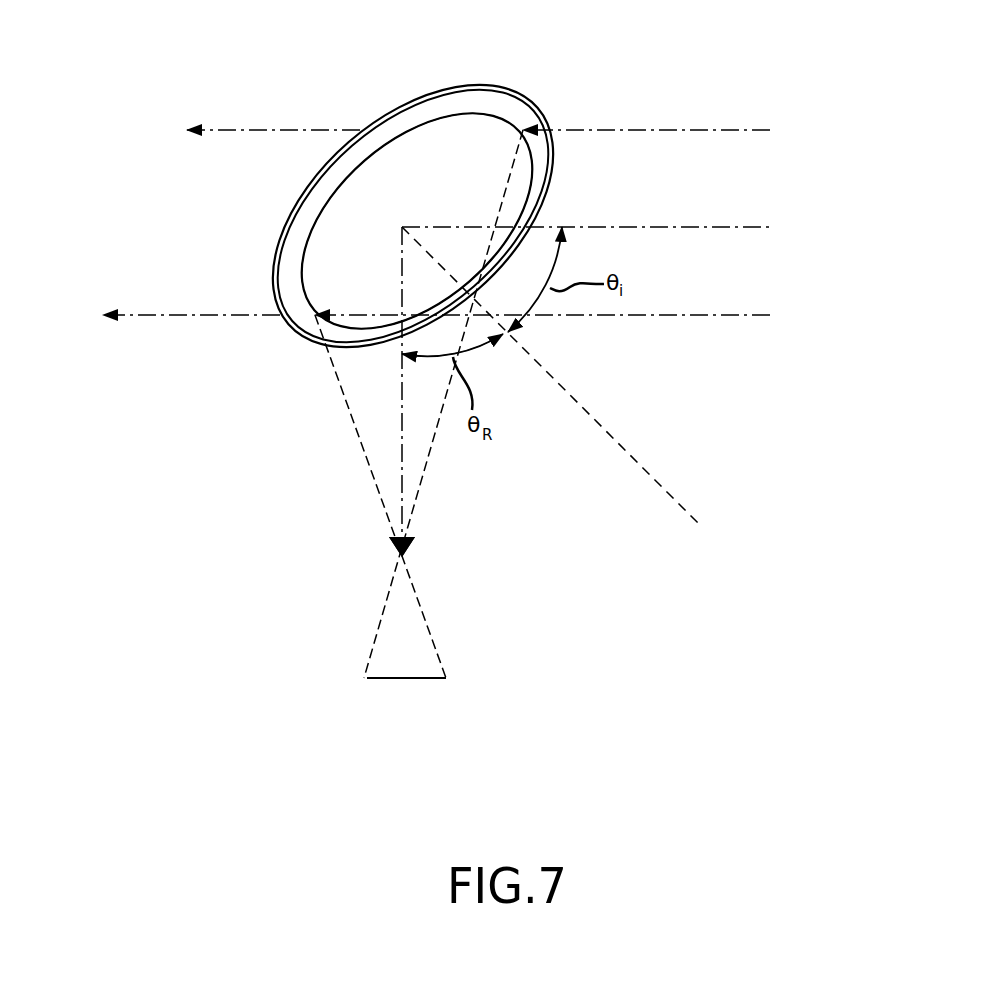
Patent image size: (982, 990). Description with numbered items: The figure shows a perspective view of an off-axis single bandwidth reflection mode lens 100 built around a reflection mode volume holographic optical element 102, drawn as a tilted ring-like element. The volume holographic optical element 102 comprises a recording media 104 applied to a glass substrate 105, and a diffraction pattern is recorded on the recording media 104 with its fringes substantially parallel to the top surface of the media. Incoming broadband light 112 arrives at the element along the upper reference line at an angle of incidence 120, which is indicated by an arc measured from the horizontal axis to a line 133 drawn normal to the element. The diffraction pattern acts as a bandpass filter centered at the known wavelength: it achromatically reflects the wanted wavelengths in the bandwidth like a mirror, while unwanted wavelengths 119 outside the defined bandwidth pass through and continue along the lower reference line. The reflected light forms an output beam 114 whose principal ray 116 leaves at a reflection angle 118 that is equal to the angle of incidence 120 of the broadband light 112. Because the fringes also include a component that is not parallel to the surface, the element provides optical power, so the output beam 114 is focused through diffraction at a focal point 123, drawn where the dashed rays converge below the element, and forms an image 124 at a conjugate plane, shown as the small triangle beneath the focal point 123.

The off-axis single bandwidth reflection mode lens 100 is at (300, 72).
The reflection mode volume holographic optical element 102 is at (345, 224).
The recording media 104 is at (475, 137).
The glass substrate 105 is at (272, 329).
The broadband light 112 is at (720, 129).
The output beam 114 is at (370, 452).
The principal ray 116 is at (400, 397).
The angle θR 118 is at (516, 452).
The unwanted wavelengths 119 is at (194, 125).
The angle of incidence θi 120 is at (660, 273).
The focal point 123 is at (420, 565).
The image 124 is at (445, 701).
The mirror normal line 133 is at (579, 408).